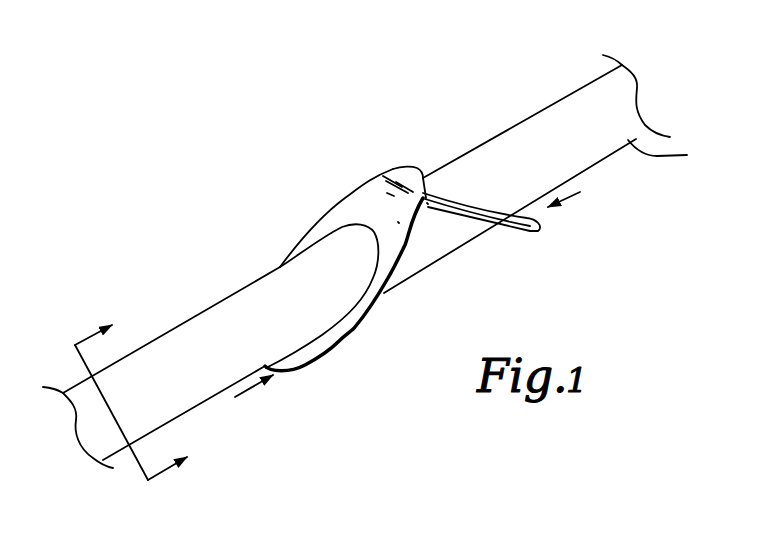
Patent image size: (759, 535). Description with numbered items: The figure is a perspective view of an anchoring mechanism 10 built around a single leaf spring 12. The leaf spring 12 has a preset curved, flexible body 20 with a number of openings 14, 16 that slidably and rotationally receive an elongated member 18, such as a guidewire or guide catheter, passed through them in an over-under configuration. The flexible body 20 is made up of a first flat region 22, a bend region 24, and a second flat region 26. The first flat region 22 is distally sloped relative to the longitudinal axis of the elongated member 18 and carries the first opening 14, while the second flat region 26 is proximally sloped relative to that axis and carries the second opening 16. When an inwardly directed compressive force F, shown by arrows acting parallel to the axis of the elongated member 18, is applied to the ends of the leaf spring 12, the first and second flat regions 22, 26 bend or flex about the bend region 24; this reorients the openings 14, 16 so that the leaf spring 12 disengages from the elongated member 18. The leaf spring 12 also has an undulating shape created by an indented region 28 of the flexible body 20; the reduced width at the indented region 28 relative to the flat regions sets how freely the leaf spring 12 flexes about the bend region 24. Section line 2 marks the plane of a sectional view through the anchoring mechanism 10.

The anchoring mechanism 10 is at (375, 115).
The leaf spring 12 is at (427, 157).
The first opening 14 is at (337, 288).
The second opening 16 is at (470, 200).
The elongated member 18 is at (676, 156).
The flexible body 20 is at (388, 258).
The first flat region 22 is at (398, 222).
The bend region 24 is at (427, 203).
The second flat region 26 is at (540, 225).
The indented region 28 is at (355, 181).
The section line 2- 2 is at (141, 392).
The force F is at (418, 304).